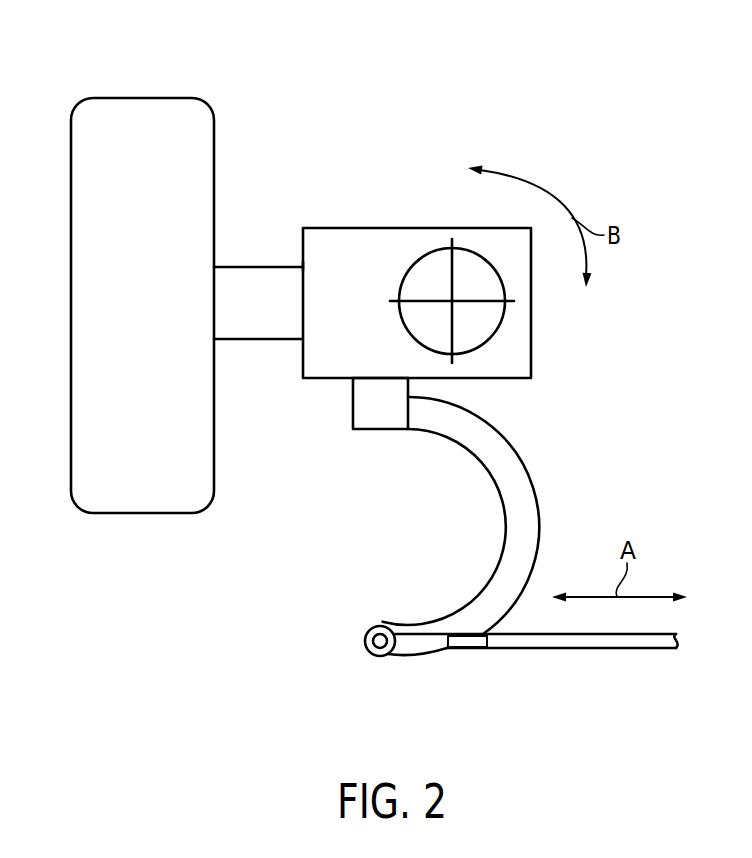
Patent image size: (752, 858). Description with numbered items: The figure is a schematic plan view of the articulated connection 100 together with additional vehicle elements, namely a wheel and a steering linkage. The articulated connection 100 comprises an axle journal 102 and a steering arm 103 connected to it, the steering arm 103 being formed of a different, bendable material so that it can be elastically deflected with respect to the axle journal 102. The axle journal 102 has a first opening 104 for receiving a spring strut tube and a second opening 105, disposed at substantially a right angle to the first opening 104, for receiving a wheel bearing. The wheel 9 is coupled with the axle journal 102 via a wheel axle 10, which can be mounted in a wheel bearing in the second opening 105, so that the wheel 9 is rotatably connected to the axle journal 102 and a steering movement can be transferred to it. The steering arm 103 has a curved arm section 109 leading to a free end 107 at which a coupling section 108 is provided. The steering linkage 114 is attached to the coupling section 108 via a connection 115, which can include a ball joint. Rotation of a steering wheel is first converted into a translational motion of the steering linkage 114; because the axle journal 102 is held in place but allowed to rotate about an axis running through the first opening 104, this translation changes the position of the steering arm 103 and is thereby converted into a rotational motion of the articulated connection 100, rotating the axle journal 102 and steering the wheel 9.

The wheel 9 is at (70, 295).
The wheel axle 10 is at (245, 328).
The articulated connection 100 is at (540, 88).
The axle journal 102 is at (367, 228).
The steering arm 103 is at (503, 505).
The first opening 104 is at (483, 327).
The second opening 105 is at (302, 265).
The free end 107 is at (380, 676).
The coupling section 108 is at (362, 667).
The curved arm section 109 is at (540, 462).
The steering linkage 114 is at (545, 642).
The connection 115 is at (373, 640).